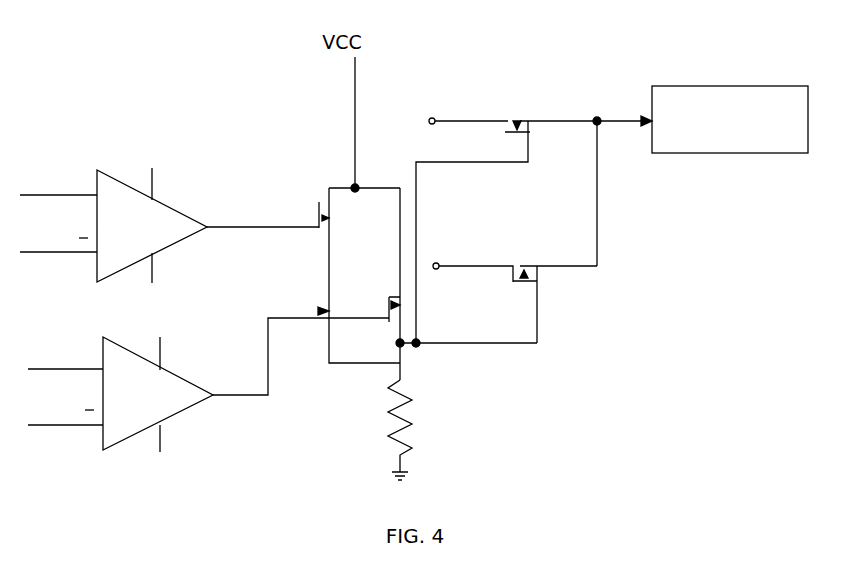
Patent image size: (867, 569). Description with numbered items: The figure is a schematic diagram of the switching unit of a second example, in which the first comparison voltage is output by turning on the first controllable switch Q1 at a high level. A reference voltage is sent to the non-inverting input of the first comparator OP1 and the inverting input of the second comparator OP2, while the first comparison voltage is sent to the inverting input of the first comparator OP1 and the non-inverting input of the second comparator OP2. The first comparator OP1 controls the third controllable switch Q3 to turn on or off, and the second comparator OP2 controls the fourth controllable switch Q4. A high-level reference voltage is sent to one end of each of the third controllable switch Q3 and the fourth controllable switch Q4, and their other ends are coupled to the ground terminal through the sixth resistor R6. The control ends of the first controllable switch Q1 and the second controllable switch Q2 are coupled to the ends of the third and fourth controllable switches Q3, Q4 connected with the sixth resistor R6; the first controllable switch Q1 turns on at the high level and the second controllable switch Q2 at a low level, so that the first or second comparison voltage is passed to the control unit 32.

The control unit 32 is at (702, 119).
The first controllable switch Q1 is at (515, 288).
The second controllable switch Q2 is at (499, 108).
The third controllable switch Q3 is at (303, 275).
The fourth controllable switch Q4 is at (376, 284).
The sixth resistor R6 is at (418, 430).
The first comparator OP1 is at (113, 213).
The second comparator OP2 is at (208, 381).